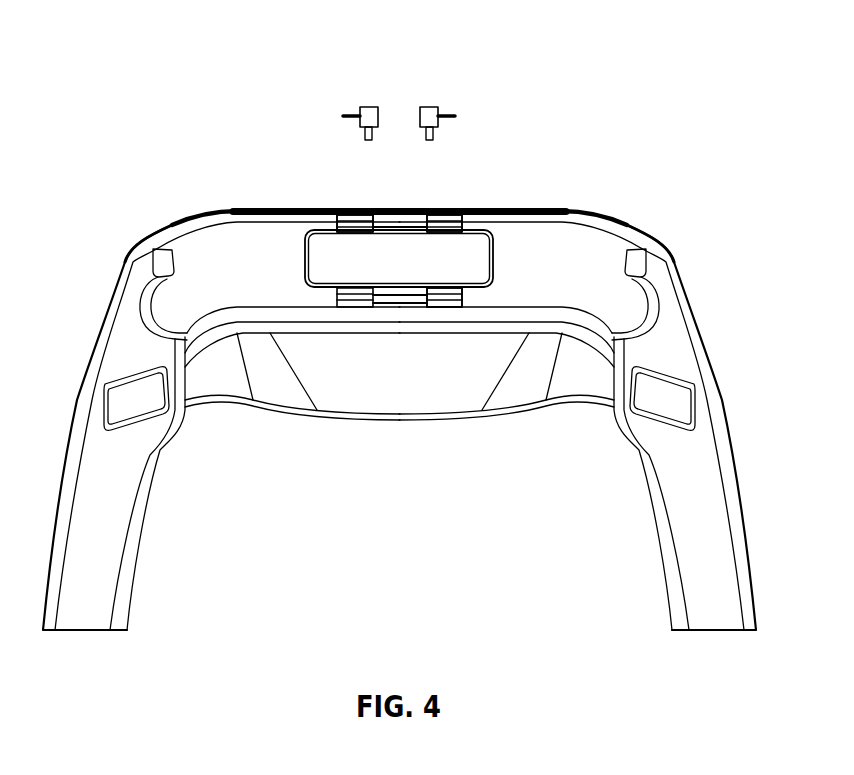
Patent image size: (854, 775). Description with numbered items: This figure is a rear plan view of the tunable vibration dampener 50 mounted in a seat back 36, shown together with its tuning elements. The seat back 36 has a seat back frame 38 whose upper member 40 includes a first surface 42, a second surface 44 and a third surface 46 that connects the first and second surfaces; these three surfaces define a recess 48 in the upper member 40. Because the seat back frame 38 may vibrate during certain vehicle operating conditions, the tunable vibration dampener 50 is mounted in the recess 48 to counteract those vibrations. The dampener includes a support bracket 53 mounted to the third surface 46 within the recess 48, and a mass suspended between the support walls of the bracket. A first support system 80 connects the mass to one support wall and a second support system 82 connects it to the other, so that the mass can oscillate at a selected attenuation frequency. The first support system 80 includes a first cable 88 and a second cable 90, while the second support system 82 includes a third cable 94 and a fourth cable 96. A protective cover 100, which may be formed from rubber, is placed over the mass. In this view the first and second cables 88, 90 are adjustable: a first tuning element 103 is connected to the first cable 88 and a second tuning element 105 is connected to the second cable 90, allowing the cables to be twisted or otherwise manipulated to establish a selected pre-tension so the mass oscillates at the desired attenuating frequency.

The seat back 36 is at (113, 203).
The seat back frame 38 is at (110, 297).
The upper member 40 is at (556, 207).
The first surface 42 is at (573, 230).
The second surface 44 is at (507, 306).
The third surface 46 is at (199, 276).
The recess 48 is at (588, 278).
The tunable vibration dampener 50 is at (505, 275).
The support bracket 53 is at (326, 218).
The first support system 80 is at (477, 217).
The second support system 82 is at (478, 295).
The first cable 88 is at (338, 217).
The second cable 90 is at (421, 219).
The third cable 94 is at (366, 290).
The fourth cable 96 is at (426, 290).
The protective cover 100 is at (423, 272).
The first tuning element 103 is at (364, 95).
The second tuning element 105 is at (433, 95).